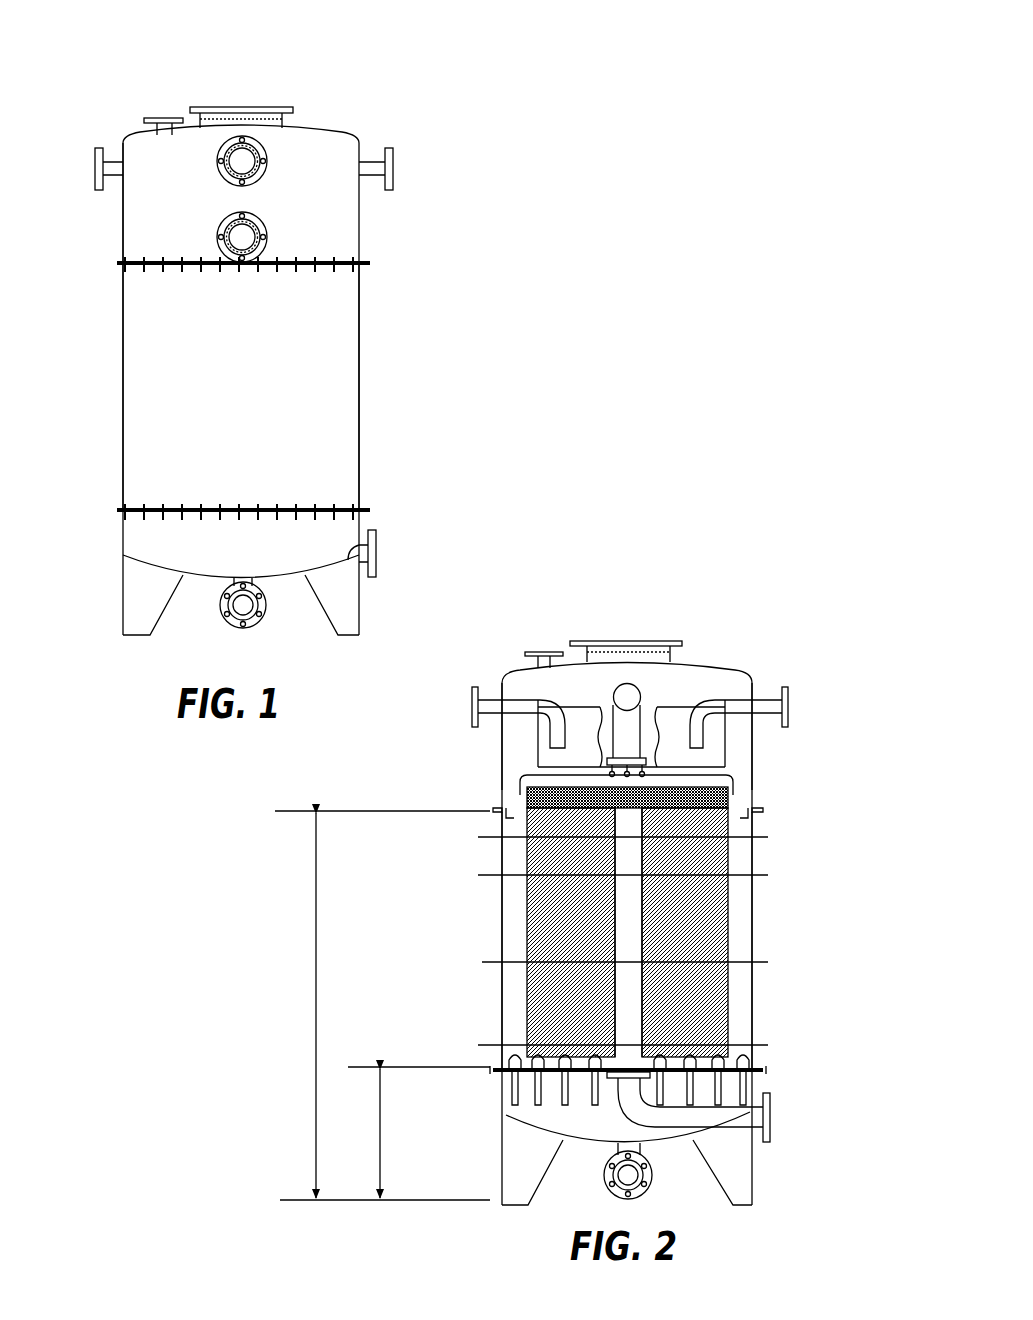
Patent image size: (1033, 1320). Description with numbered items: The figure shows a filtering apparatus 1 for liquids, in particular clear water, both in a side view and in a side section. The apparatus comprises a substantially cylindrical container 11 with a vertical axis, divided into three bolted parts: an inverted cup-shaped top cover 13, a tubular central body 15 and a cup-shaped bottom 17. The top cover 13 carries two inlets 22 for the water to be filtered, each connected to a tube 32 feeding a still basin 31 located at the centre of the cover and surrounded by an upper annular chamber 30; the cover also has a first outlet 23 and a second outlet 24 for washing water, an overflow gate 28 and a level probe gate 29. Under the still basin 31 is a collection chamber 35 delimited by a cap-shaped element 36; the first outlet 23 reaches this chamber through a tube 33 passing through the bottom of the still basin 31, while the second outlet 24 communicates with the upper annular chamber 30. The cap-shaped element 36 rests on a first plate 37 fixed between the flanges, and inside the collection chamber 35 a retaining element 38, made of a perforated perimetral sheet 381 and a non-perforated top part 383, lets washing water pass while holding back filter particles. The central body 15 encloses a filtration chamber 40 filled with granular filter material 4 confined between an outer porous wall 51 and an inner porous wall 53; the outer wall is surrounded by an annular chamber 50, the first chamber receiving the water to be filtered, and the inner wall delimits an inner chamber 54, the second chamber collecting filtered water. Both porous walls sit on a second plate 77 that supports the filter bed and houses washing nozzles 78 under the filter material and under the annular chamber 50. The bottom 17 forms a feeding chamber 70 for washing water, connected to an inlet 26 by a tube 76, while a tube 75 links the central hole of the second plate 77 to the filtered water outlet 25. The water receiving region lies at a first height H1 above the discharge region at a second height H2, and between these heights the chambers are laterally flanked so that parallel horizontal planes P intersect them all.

In FIG. 1, the filtering apparatus 1 is at (457, 383).
In FIG. 2, the filtering apparatus 1 is at (713, 634).
In FIG. 1, the container 11 is at (113, 390).
In FIG. 2, the container 11 is at (780, 979).
In FIG. 1, the top cover 13 is at (145, 226).
In FIG. 2, the top cover 13 is at (496, 740).
In FIG. 1, the central body 15 is at (150, 448).
In FIG. 2, the central body 15 is at (757, 945).
In FIG. 1, the bottom 17 is at (170, 538).
In FIG. 2, the bottom 17 is at (502, 1107).
In FIG. 1, the inlet 22 is at (97, 148).
In FIG. 2, the inlet 22 is at (475, 700).
In FIG. 1, the first outlet 23 is at (262, 158).
In FIG. 2, the first outlet 23 is at (628, 690).
In FIG. 1, the second outlet 24 is at (262, 236).
In FIG. 1, the outlet 25 is at (376, 550).
In FIG. 2, the outlet 25 is at (770, 1108).
In FIG. 1, the inlet 26 is at (243, 610).
In FIG. 2, the inlet 26 is at (628, 1175).
In FIG. 1, the overflow gate 28 is at (243, 107).
In FIG. 2, the overflow gate 28 is at (613, 641).
In FIG. 1, the level probe gate 29 is at (160, 120).
In FIG. 2, the level probe gate 29 is at (540, 652).
In FIG. 2, the upper annular chamber 30 is at (733, 728).
In FIG. 2, the still basin 31 is at (670, 725).
In FIG. 2, the tube 32 is at (528, 703).
In FIG. 2, the tube 33 is at (627, 735).
In FIG. 2, the collection chamber 35 is at (710, 777).
In FIG. 2, the cap-shaped element 36 is at (516, 770).
In FIG. 2, the first plate 37 is at (746, 815).
In FIG. 2, the retaining element 38 is at (735, 789).
In FIG. 2, the perforated perimetral sheet 381 is at (730, 793).
In FIG. 2, the top part 383 is at (565, 787).
In FIG. 2, the filtration chamber 40 is at (667, 888).
In FIG. 2, the granular filter material 4 is at (570, 967).
In FIG. 2, the annular chamber 50 is at (737, 860).
In FIG. 2, the outer porous wall 51 is at (730, 897).
In FIG. 2, the inner porous wall 53 is at (617, 990).
In FIG. 2, the inner chamber 54 is at (627, 1012).
In FIG. 2, the feeding chamber 70 is at (612, 1146).
In FIG. 2, the tube 75 is at (667, 1110).
In FIG. 2, the tube 76 is at (640, 1150).
In FIG. 2, the second plate 77 is at (598, 1108).
In FIG. 2, the nozzles 78 is at (733, 1078).
In FIG. 2, the horizontal planes P is at (495, 837).
In FIG. 2, the first height H1 is at (382, 1005).
In FIG. 2, the second height H2 is at (416, 1132).